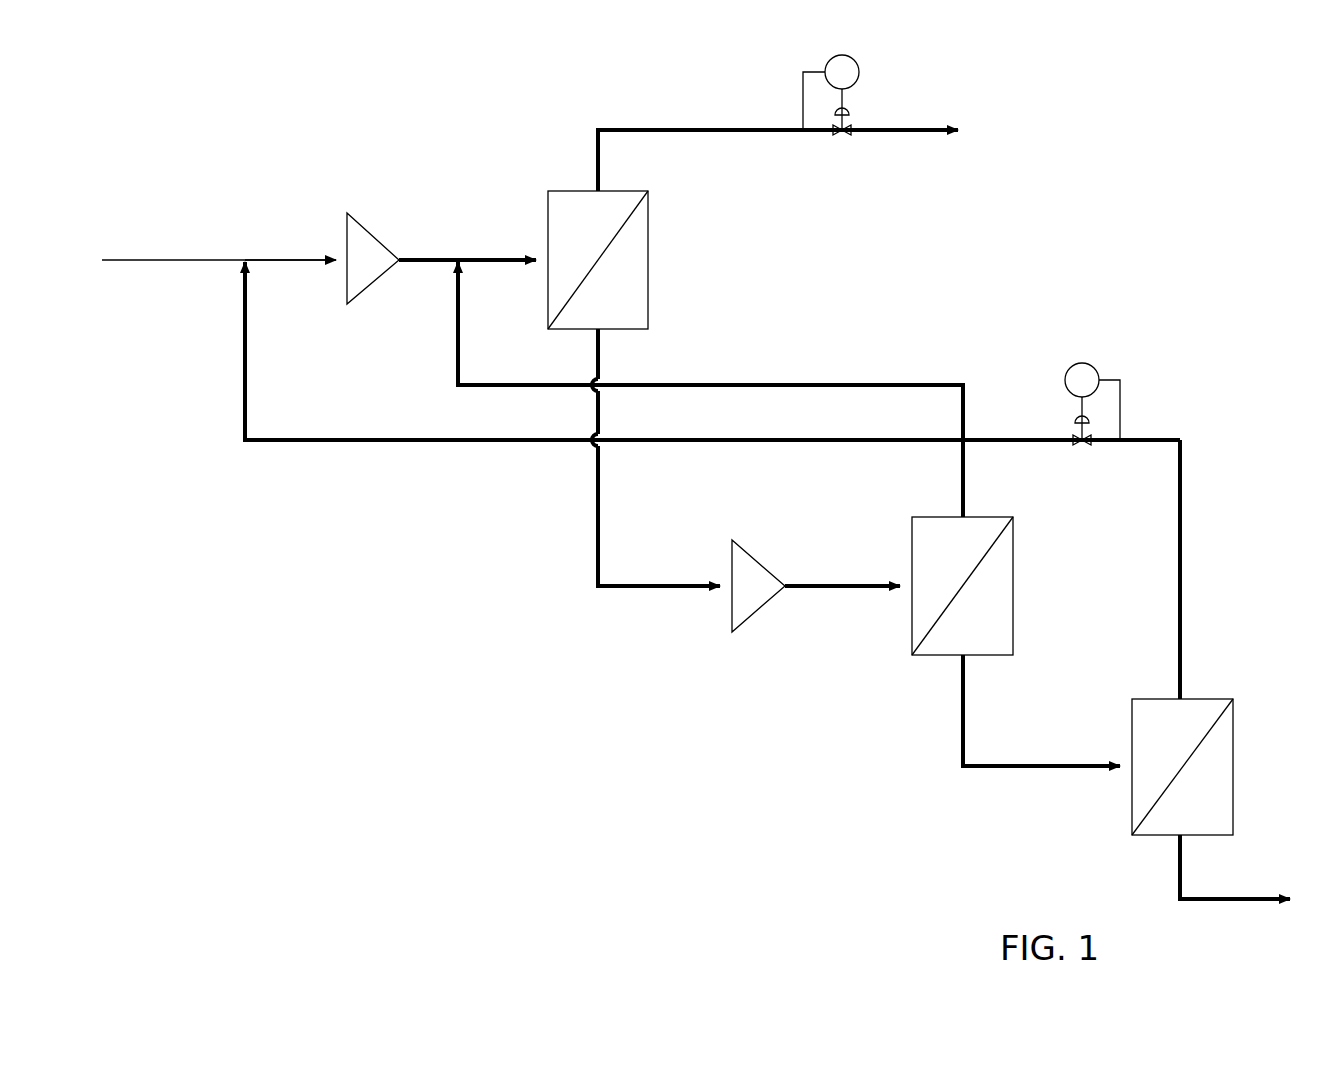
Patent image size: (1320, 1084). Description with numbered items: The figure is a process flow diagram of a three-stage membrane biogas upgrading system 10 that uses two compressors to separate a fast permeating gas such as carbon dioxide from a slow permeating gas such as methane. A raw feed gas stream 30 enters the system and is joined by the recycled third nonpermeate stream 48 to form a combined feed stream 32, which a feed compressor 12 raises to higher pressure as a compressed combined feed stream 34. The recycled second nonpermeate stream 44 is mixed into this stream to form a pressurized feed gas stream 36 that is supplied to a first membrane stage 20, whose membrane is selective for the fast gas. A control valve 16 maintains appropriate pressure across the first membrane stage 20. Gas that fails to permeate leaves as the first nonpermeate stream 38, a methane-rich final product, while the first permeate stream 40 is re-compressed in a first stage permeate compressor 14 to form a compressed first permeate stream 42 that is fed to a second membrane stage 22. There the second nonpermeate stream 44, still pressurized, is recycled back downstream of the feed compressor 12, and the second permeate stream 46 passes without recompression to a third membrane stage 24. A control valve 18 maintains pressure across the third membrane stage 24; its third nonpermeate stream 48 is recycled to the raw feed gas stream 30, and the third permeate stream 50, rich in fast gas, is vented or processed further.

The three-stage membrane biogas upgrading system 10 is at (1162, 152).
The feed compressor 12 is at (377, 267).
The first stage permeate compressor 14 is at (761, 599).
The control valve 16 is at (846, 56).
The control valve 18 is at (1075, 365).
The first membrane stage 20 is at (597, 243).
The second membrane stage 22 is at (957, 573).
The third membrane stage 24 is at (1180, 751).
The raw feed gas stream 30 is at (205, 258).
The combined feed stream 32 is at (268, 258).
The compressed combined feed stream 34 is at (453, 258).
The pressurized feed gas stream 36 is at (480, 258).
The first nonpermeate stream 38 is at (718, 128).
The first permeate stream 40 is at (680, 583).
The compressed first permeate stream 42 is at (862, 583).
The second nonpermeate stream 44 is at (540, 383).
The second permeate stream 46 is at (1054, 763).
The third nonpermeate stream 48 is at (292, 438).
The third permeate stream 50 is at (1268, 896).